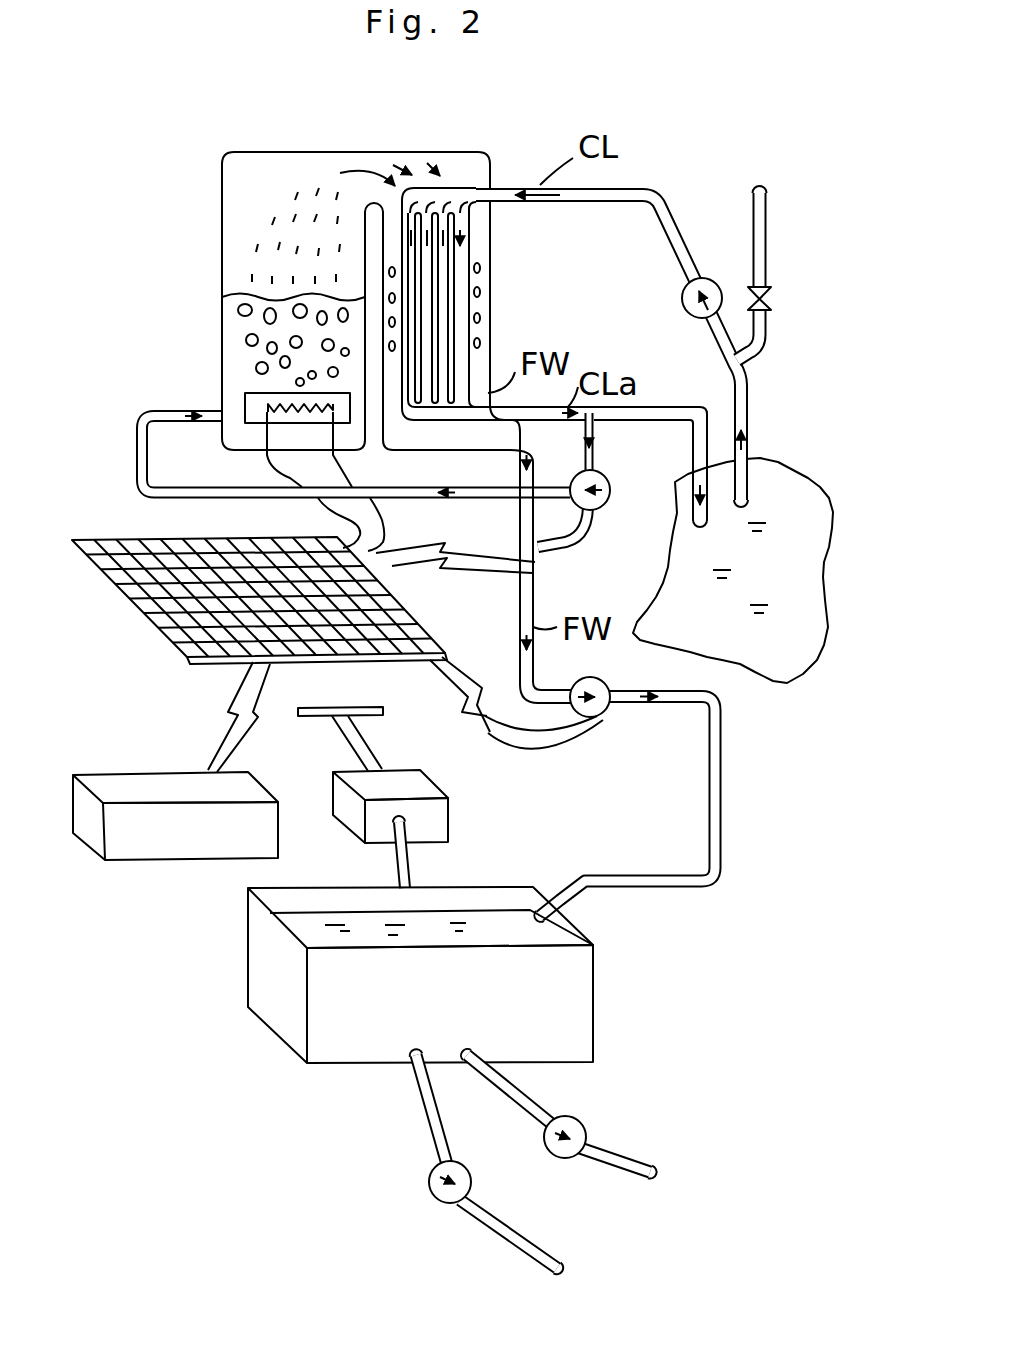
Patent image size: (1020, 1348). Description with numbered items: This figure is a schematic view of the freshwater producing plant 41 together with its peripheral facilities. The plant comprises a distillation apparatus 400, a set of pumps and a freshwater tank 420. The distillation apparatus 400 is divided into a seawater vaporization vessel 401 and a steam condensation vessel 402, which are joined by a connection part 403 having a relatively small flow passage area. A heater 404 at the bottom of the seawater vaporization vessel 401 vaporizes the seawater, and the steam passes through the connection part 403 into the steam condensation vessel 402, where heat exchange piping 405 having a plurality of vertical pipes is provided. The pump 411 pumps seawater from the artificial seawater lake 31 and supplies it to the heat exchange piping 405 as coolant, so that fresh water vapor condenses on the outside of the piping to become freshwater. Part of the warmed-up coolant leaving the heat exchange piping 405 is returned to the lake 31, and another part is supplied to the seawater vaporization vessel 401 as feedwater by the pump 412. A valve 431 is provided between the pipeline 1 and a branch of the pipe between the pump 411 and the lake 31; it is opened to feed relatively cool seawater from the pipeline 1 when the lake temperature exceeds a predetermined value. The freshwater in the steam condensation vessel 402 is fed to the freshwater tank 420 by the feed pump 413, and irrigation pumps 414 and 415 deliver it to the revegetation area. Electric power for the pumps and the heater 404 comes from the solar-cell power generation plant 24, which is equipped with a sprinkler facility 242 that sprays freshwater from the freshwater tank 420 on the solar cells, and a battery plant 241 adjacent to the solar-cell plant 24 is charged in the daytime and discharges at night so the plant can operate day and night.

The pipeline 1 is at (768, 215).
The solar-cell power generation plant 24 is at (133, 600).
The artificial seawater lake 31 is at (817, 655).
The freshwater producing plant 41 is at (685, 148).
The battery plant 241 is at (87, 850).
The sprinkler facility 242 is at (450, 790).
The distillation apparatus 400 is at (258, 144).
The seawater vaporization vessel 401 is at (222, 270).
The steam condensation vessel 402 is at (492, 250).
The connection part 403 is at (371, 150).
The heater 404 is at (236, 392).
The heat exchange piping 405 is at (470, 286).
The pump 411 is at (690, 313).
The pump 412 is at (605, 506).
The feed pump 413 is at (605, 713).
The irrigation pump 414 is at (585, 1120).
The irrigation pump 415 is at (472, 1175).
The freshwater tank 420 is at (595, 988).
The valve 431 is at (773, 292).